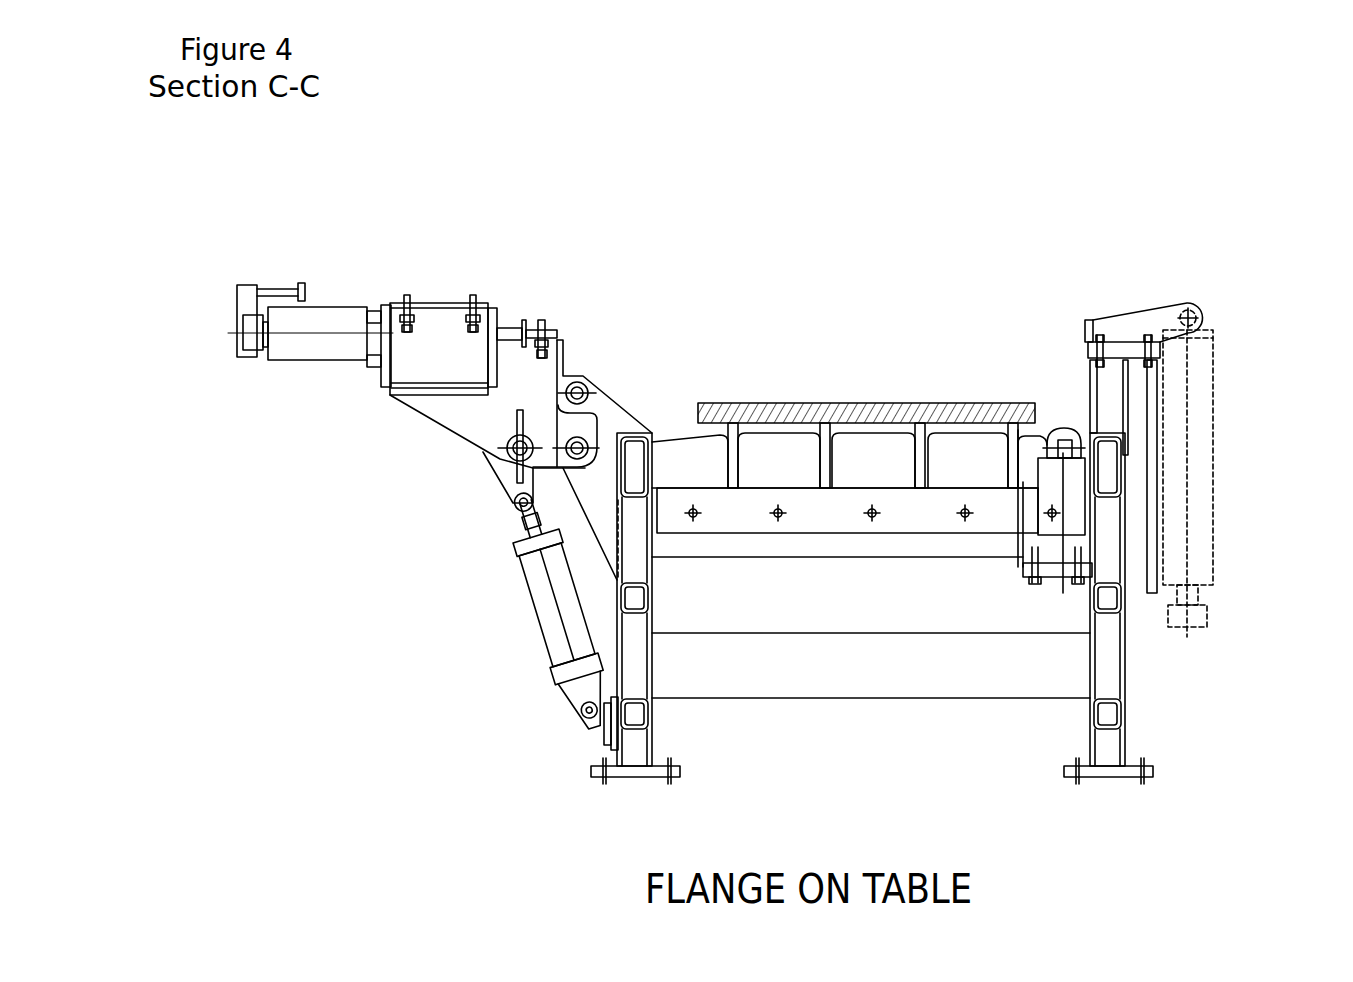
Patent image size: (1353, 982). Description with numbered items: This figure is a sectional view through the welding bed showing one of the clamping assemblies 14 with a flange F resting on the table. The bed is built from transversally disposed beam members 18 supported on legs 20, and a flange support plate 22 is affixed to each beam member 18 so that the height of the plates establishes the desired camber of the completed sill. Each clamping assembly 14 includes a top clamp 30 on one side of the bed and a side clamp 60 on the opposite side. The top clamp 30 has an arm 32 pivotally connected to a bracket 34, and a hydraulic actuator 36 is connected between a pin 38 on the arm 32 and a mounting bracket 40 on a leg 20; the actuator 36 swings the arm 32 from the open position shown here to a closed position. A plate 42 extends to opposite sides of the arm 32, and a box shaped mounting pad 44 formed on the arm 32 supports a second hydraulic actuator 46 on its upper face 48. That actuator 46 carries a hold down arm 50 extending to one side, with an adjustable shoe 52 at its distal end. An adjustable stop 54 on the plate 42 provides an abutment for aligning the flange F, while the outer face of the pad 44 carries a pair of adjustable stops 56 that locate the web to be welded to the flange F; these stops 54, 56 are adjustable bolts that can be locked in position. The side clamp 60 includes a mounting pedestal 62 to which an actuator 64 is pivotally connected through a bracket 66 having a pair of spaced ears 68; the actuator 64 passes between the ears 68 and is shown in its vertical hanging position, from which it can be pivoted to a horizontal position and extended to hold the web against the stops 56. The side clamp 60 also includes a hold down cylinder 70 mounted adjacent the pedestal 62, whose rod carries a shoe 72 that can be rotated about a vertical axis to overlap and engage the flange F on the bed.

The clamping assembly 14 is at (499, 549).
The beam member 18 is at (812, 545).
The leg 20 is at (655, 745).
The flange support plate 22 is at (916, 525).
The top clamp 30 is at (383, 348).
The arm 32 is at (460, 412).
The bracket 34 is at (615, 408).
The hydraulic actuator 36 is at (546, 628).
The pin 38 is at (506, 455).
The mounting bracket 40 is at (601, 724).
The plate 42 is at (511, 328).
The mounting pad 44 is at (431, 372).
The hydraulic actuator 46 is at (334, 310).
The upper face 48 is at (380, 380).
The hold down arm 50 is at (238, 299).
The adjustable shoe 52 is at (282, 282).
The adjustable stop 54 is at (545, 320).
The adjustable stops 56 is at (406, 293).
The side clamp 60 is at (1135, 452).
The mounting pedestal 62 is at (1090, 377).
The actuator 64 is at (1205, 425).
The bracket 66 is at (1152, 310).
The ears 68 is at (1129, 317).
The hold down cylinder 70 is at (1047, 495).
The shoe 72 is at (1058, 427).
The flange F is at (877, 403).